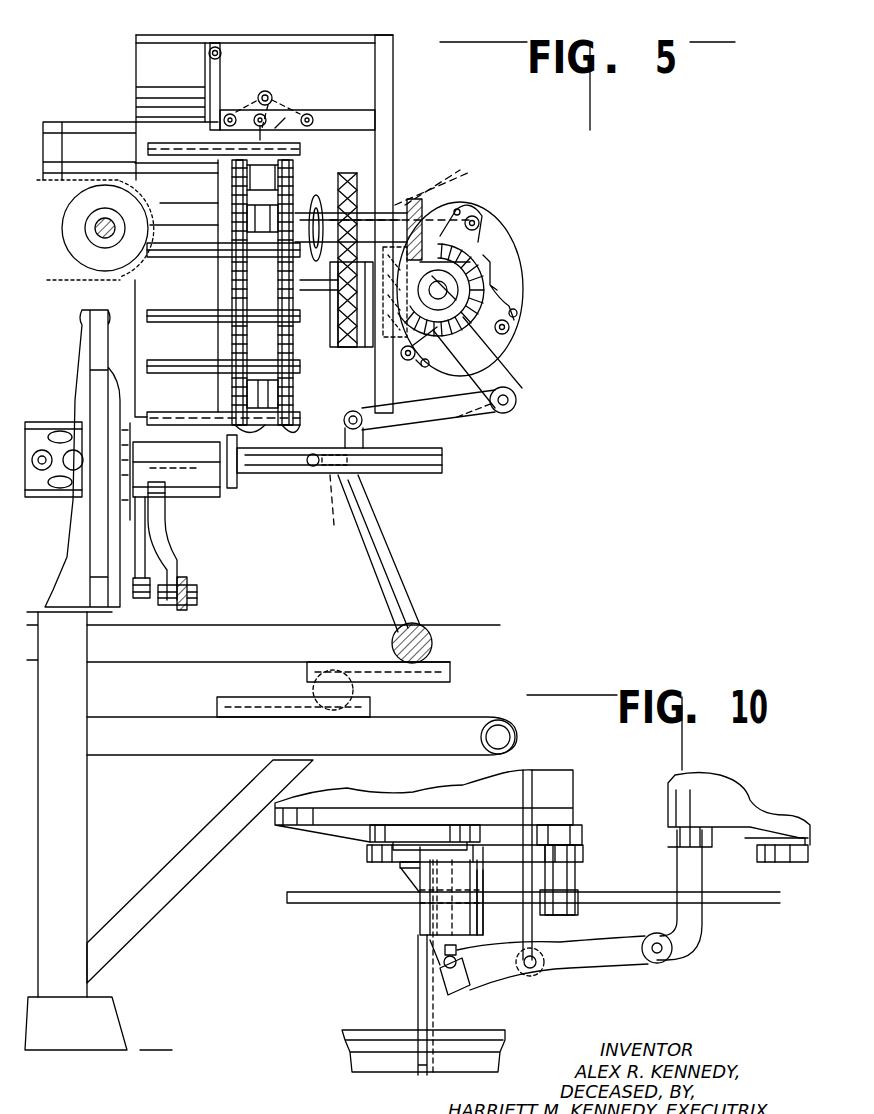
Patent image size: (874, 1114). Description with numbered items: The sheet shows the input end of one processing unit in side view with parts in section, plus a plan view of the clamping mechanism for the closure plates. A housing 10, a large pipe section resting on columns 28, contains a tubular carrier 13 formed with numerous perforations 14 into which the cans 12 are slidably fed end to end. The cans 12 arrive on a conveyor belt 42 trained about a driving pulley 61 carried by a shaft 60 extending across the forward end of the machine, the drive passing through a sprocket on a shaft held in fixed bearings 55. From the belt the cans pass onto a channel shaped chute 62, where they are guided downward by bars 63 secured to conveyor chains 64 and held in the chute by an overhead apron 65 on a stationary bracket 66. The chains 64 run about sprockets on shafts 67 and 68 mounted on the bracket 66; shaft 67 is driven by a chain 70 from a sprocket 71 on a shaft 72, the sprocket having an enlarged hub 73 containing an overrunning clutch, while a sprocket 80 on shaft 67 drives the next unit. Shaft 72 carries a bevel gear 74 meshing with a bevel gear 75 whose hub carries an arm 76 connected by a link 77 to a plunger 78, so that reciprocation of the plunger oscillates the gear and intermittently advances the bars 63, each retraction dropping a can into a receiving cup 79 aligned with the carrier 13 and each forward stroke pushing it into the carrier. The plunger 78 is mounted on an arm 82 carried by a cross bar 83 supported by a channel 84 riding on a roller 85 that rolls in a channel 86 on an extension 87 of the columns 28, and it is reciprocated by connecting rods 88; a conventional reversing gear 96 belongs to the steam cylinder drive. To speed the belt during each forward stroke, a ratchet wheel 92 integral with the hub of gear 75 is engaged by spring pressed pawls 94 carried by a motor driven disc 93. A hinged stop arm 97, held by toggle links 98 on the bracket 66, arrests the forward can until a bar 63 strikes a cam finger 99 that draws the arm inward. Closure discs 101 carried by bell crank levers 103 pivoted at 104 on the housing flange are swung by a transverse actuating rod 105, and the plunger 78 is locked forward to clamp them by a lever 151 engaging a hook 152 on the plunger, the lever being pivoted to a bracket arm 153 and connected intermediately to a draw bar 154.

In FIG. 5, the housing 10 is at (86, 352).
In FIG. 10, the housing 10 is at (670, 798).
In FIG. 5, the cans 12 is at (78, 122).
In FIG. 5, the tubular carrier 13 is at (52, 424).
In FIG. 10, the tubular carrier 13 is at (433, 850).
In FIG. 5, the perforations 14 is at (42, 468).
In FIG. 5, the columns 28 is at (76, 850).
In FIG. 5, the conveyor belts 42 is at (52, 184).
In FIG. 5, the fixed bearings 55 is at (462, 272).
In FIG. 5, the shaft 60 is at (98, 233).
In FIG. 5, the driving pulleys 61 is at (61, 240).
In FIG. 5, the chute 62 is at (180, 190).
In FIG. 5, the bars 63 is at (148, 150).
In FIG. 5, the conveyor chains 64 is at (267, 436).
In FIG. 5, the overhead apron 65 is at (140, 62).
In FIG. 5, the bracket 66 is at (393, 90).
In FIG. 5, the shaft 67 is at (385, 205).
In FIG. 5, the shaft 68 is at (345, 425).
In FIG. 5, the chain 70 is at (350, 180).
In FIG. 5, the sprocket 71 is at (332, 330).
In FIG. 5, the shaft 72 is at (318, 292).
In FIG. 5, the enlarged hub 73 is at (370, 345).
In FIG. 5, the bevel gear 74 is at (446, 183).
In FIG. 5, the bevel gear 75 is at (450, 283).
In FIG. 5, the arm 76 is at (500, 375).
In FIG. 5, the link 77 is at (455, 415).
In FIG. 5, the plunger 78 is at (303, 474).
In FIG. 10, the plunger 78 is at (420, 950).
In FIG. 5, the receiving cup 79 is at (195, 497).
In FIG. 10, the receiving cup 79 is at (467, 933).
In FIG. 5, the sprocket 80 is at (316, 195).
In FIG. 5, the arm 82 is at (403, 560).
In FIG. 10, the arm 82 is at (436, 965).
In FIG. 5, the cross bar 83 is at (430, 636).
In FIG. 10, the cross bar 83 is at (368, 1040).
In FIG. 5, the channel 84 is at (440, 684).
In FIG. 5, the roller 85 is at (312, 688).
In FIG. 5, the channel 86 is at (217, 702).
In FIG. 5, the extension 87 is at (148, 750).
In FIG. 5, the connecting rods 88 is at (150, 650).
In FIG. 5, the ratchet wheel 92 is at (464, 286).
In FIG. 5, the disc 93 is at (508, 246).
In FIG. 5, the spring pressed pawls 94 is at (471, 216).
In FIG. 5, the reversing gear 96 is at (343, 110).
In FIG. 5, the hinged stop arm 97 is at (217, 84).
In FIG. 5, the toggle links 98 is at (289, 115).
In FIG. 5, the cam finger 99 is at (260, 138).
In FIG. 5, the closure discs 101 is at (138, 600).
In FIG. 10, the closure discs 101 is at (366, 853).
In FIG. 5, the bell crank lever 103 is at (178, 556).
In FIG. 10, the bell crank lever 103 is at (578, 880).
In FIG. 10, the pivot 104 is at (583, 860).
In FIG. 5, the actuating rod 105 is at (197, 605).
In FIG. 10, the actuating rod 105 is at (630, 900).
In FIG. 10, the lever 151 is at (530, 975).
In FIG. 5, the hook 152 is at (341, 512).
In FIG. 10, the hook 152 is at (460, 980).
In FIG. 10, the bracket arm 153 is at (702, 920).
In FIG. 10, the draw bar 154 is at (525, 922).